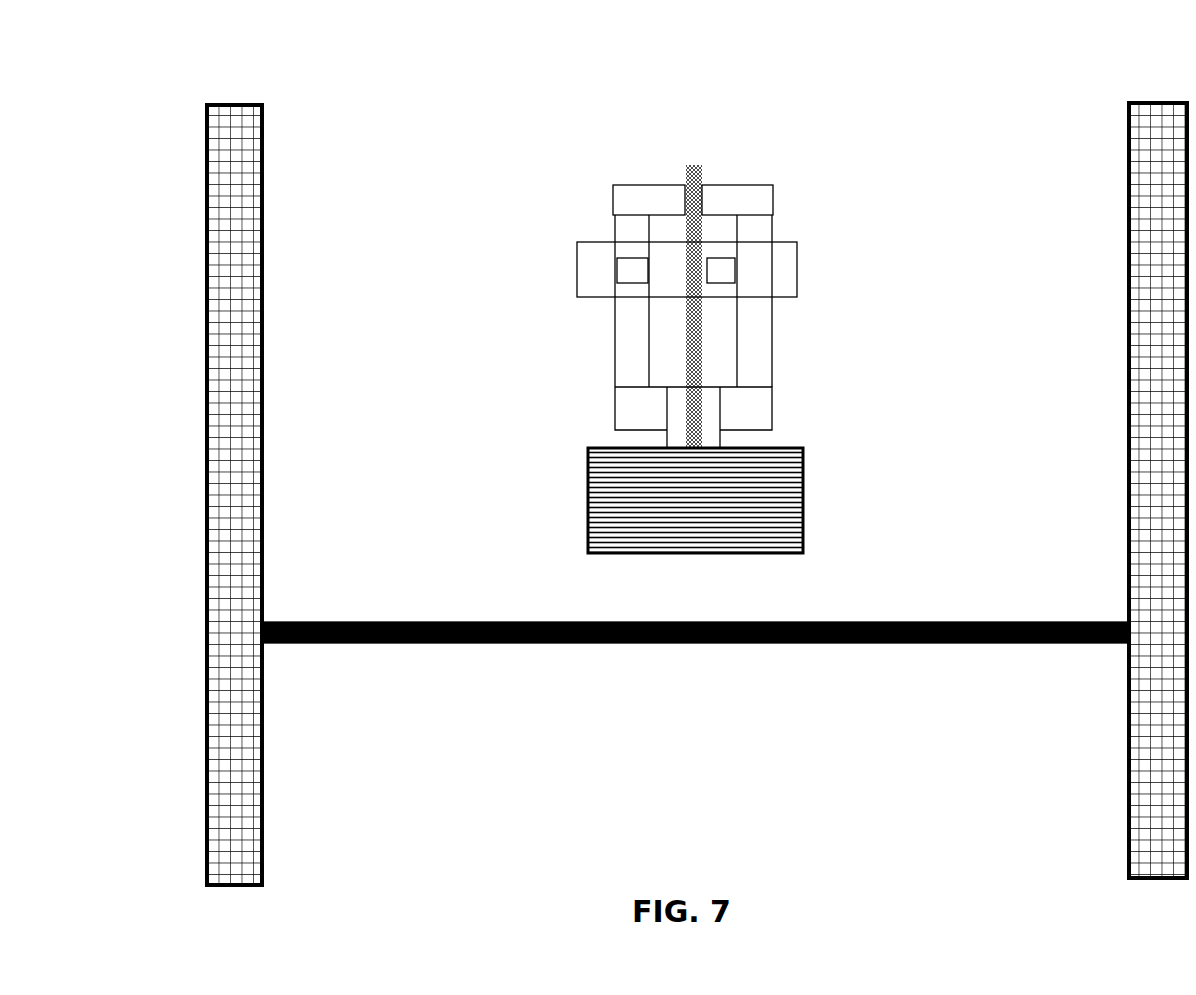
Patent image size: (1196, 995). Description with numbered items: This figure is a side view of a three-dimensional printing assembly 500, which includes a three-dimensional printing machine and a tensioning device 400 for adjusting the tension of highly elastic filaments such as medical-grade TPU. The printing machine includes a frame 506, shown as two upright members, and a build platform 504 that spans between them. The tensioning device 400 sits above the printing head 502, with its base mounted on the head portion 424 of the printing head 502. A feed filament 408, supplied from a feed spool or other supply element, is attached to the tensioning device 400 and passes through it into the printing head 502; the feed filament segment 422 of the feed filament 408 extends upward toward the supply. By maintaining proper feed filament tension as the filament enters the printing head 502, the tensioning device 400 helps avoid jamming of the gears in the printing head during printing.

The 3D printing assembly 500 is at (378, 90).
The tensioning device 400 is at (721, 253).
The feed filament segment 422 is at (697, 165).
The feed filament 408 is at (672, 344).
The head portion 424 is at (613, 447).
The printing head 502 is at (803, 499).
The build platform 504 is at (857, 644).
The frame 506 is at (263, 295).